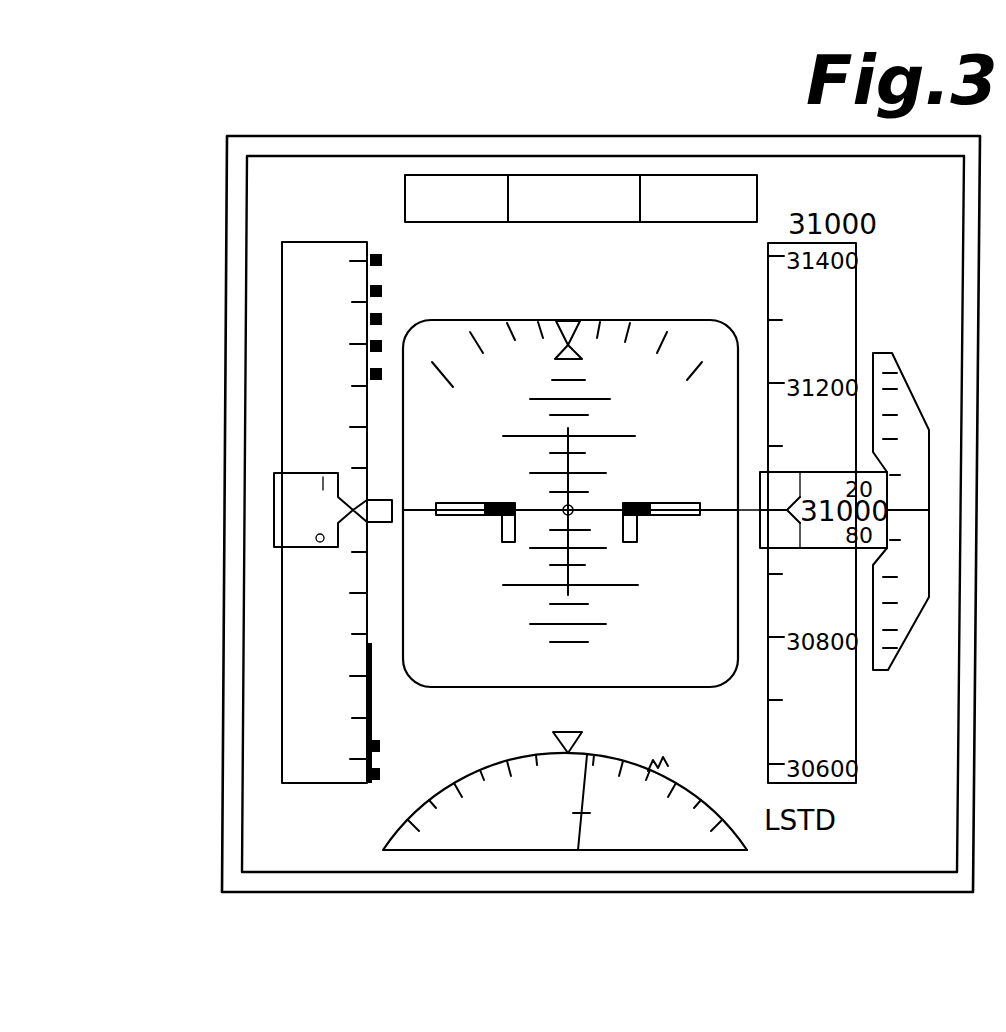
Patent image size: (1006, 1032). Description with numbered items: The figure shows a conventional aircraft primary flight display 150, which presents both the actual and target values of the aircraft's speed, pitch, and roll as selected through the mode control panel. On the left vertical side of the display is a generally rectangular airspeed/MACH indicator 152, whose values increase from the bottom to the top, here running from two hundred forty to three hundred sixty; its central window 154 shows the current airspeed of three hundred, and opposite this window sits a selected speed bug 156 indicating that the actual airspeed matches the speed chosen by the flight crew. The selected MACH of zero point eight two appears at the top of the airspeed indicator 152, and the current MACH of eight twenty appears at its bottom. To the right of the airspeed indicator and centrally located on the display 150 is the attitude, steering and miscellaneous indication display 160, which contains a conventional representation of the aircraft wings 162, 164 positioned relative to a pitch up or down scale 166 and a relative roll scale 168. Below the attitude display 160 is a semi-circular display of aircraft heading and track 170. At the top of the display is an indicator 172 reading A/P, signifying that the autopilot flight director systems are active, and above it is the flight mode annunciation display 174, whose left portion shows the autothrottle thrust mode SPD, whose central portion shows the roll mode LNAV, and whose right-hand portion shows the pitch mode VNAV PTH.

The primary flight display 150 is at (227, 236).
The airspeed/MACH indicator 152 is at (282, 316).
The central window 154 is at (274, 490).
The selected speed bug 156 is at (390, 526).
The attitude, steering and miscellaneous indication display 160 is at (413, 682).
The aircraft wing representation 162 is at (450, 502).
The aircraft wing representation 164 is at (640, 485).
The pitch up or down scale 166 is at (596, 436).
The relative roll scale 168 is at (481, 345).
The semi-circular display of aircraft heading and track 170 is at (607, 755).
The indicator 172 is at (546, 295).
The flight mode annunciation display 174 is at (523, 176).